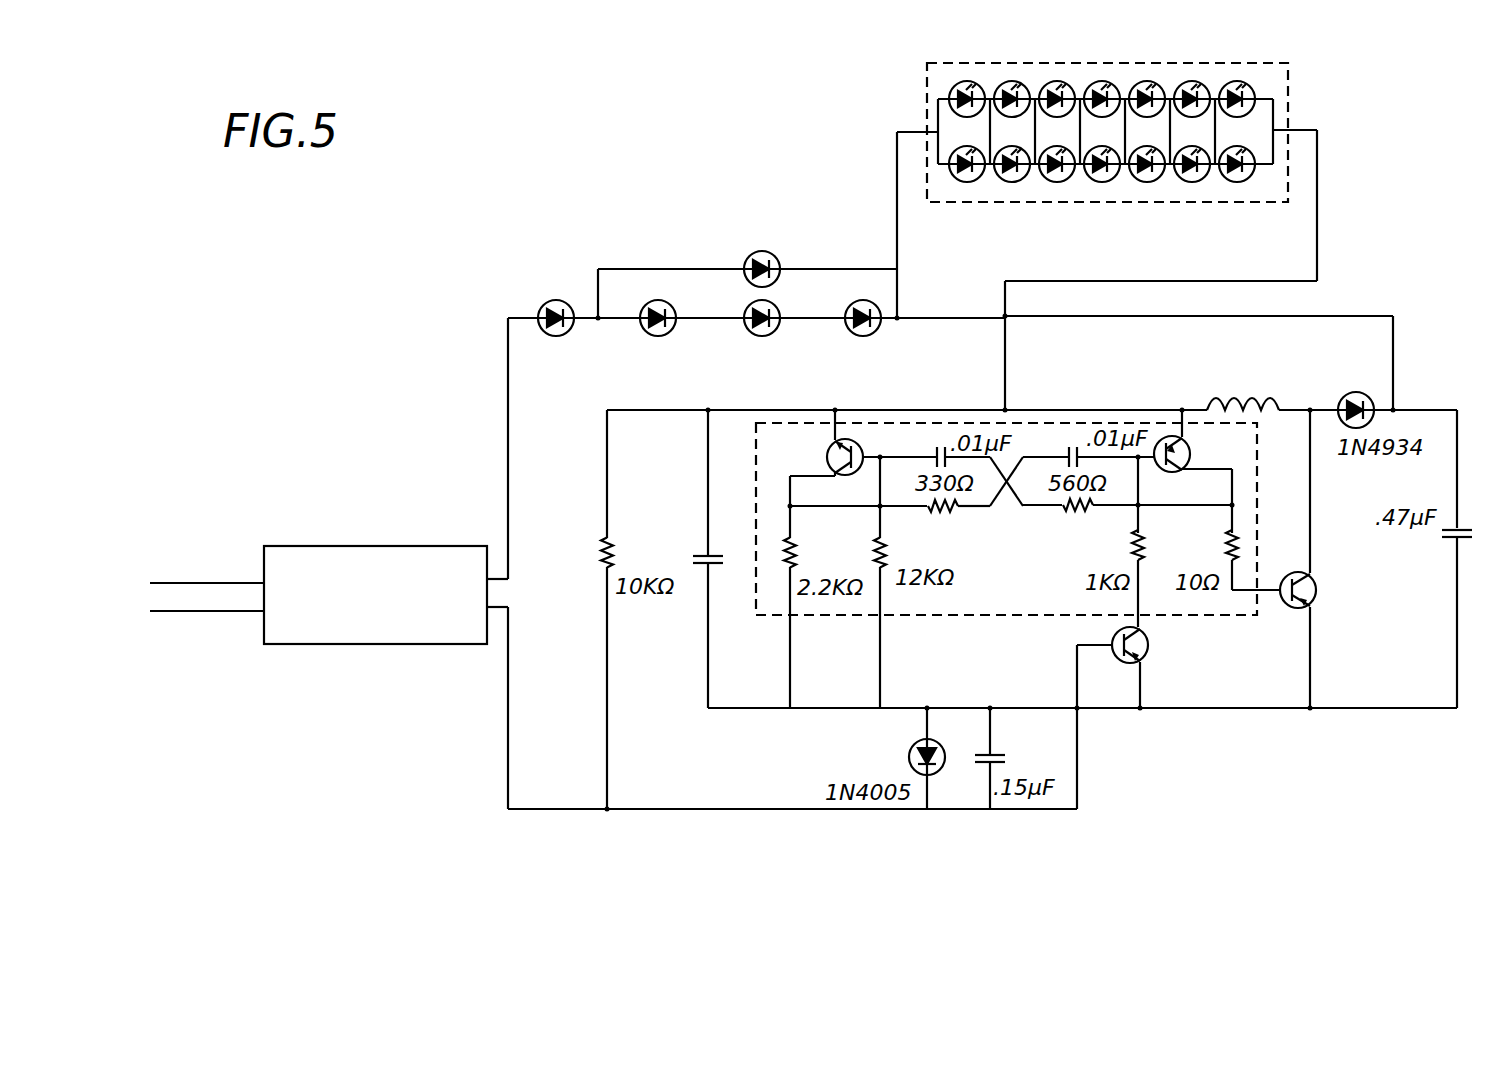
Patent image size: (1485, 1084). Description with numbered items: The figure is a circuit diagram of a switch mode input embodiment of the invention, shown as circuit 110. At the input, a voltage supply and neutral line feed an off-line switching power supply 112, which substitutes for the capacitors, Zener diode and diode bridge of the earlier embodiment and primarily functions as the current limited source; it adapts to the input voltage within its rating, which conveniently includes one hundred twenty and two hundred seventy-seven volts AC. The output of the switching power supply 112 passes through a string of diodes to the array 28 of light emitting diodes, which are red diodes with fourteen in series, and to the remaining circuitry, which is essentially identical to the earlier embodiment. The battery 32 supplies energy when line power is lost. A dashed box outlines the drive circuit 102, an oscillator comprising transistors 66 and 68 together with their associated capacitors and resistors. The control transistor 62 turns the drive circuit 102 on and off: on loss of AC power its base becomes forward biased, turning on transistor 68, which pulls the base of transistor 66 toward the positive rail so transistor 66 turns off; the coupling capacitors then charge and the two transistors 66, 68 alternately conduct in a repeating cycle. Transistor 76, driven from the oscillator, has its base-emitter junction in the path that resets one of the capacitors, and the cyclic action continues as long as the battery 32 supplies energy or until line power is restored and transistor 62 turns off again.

The circuit 110 is at (639, 165).
The array of light emitting diodes 28 is at (1063, 203).
The off-line switching power supply 112 is at (390, 546).
The battery 32 is at (688, 551).
The drive circuit 102 is at (964, 626).
The transistor 66 is at (850, 432).
The transistor 68 is at (1169, 428).
The transistor 76 is at (1330, 564).
The control transistor 62 is at (1162, 644).